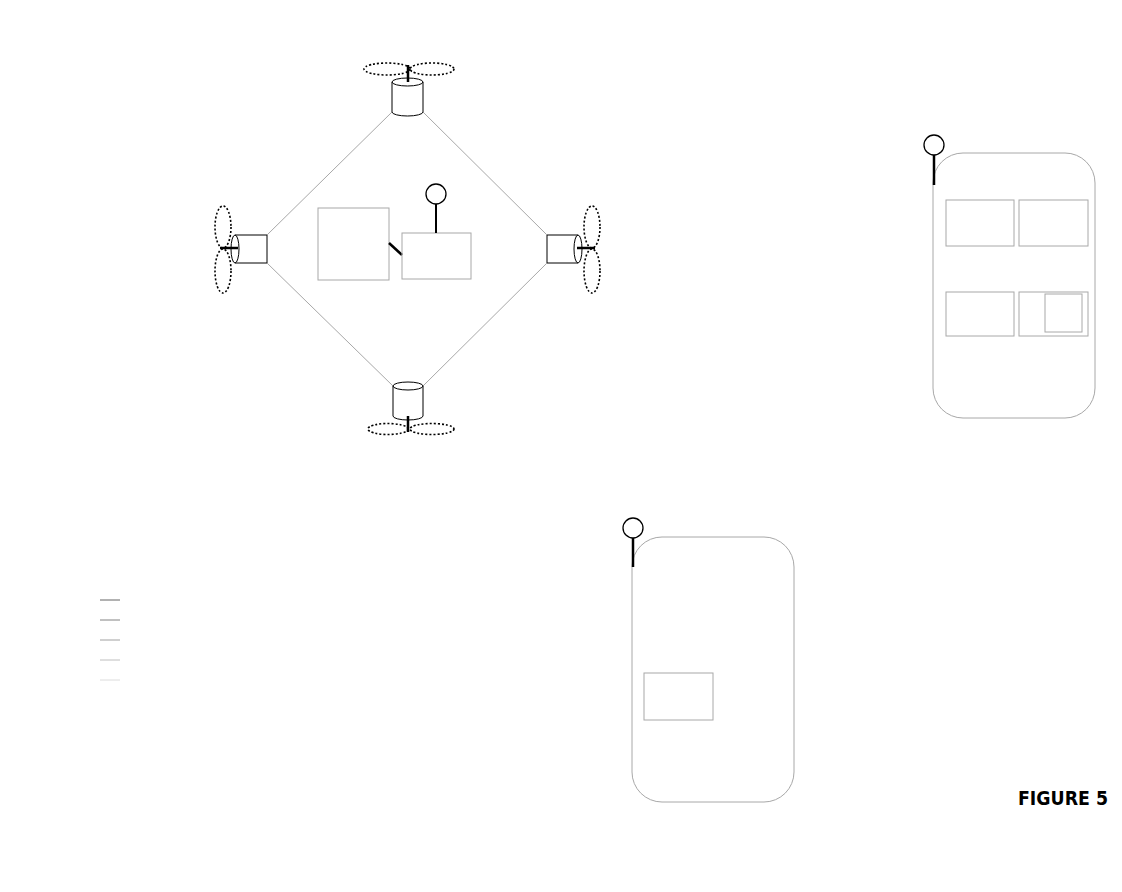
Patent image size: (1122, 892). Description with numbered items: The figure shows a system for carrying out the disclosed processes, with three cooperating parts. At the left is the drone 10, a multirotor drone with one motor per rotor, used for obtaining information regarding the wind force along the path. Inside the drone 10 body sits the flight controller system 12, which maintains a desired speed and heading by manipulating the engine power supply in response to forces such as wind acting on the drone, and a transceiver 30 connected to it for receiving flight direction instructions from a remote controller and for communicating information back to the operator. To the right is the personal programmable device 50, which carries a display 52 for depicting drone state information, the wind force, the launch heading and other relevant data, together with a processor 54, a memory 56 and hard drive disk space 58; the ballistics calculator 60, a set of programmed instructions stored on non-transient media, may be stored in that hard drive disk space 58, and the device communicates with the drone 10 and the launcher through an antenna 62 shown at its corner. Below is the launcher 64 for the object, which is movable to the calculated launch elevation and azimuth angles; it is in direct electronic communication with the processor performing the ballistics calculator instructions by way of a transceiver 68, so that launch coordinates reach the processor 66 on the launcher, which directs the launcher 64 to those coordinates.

The drone 10 is at (422, 166).
The flight controller system 12 is at (360, 244).
The transceiver 30 is at (450, 266).
The personal programmable device 50 is at (989, 188).
The display 52 is at (967, 234).
The processor 54 is at (966, 324).
The memory 56 is at (1041, 234).
The hard drive disk space 58 is at (1022, 322).
The ballistics calculator 60 is at (1063, 313).
The antenna of mobile control device 62 is at (904, 152).
The launcher 64 is at (687, 572).
The processor 66 is at (665, 708).
The transceiver 68 is at (610, 542).